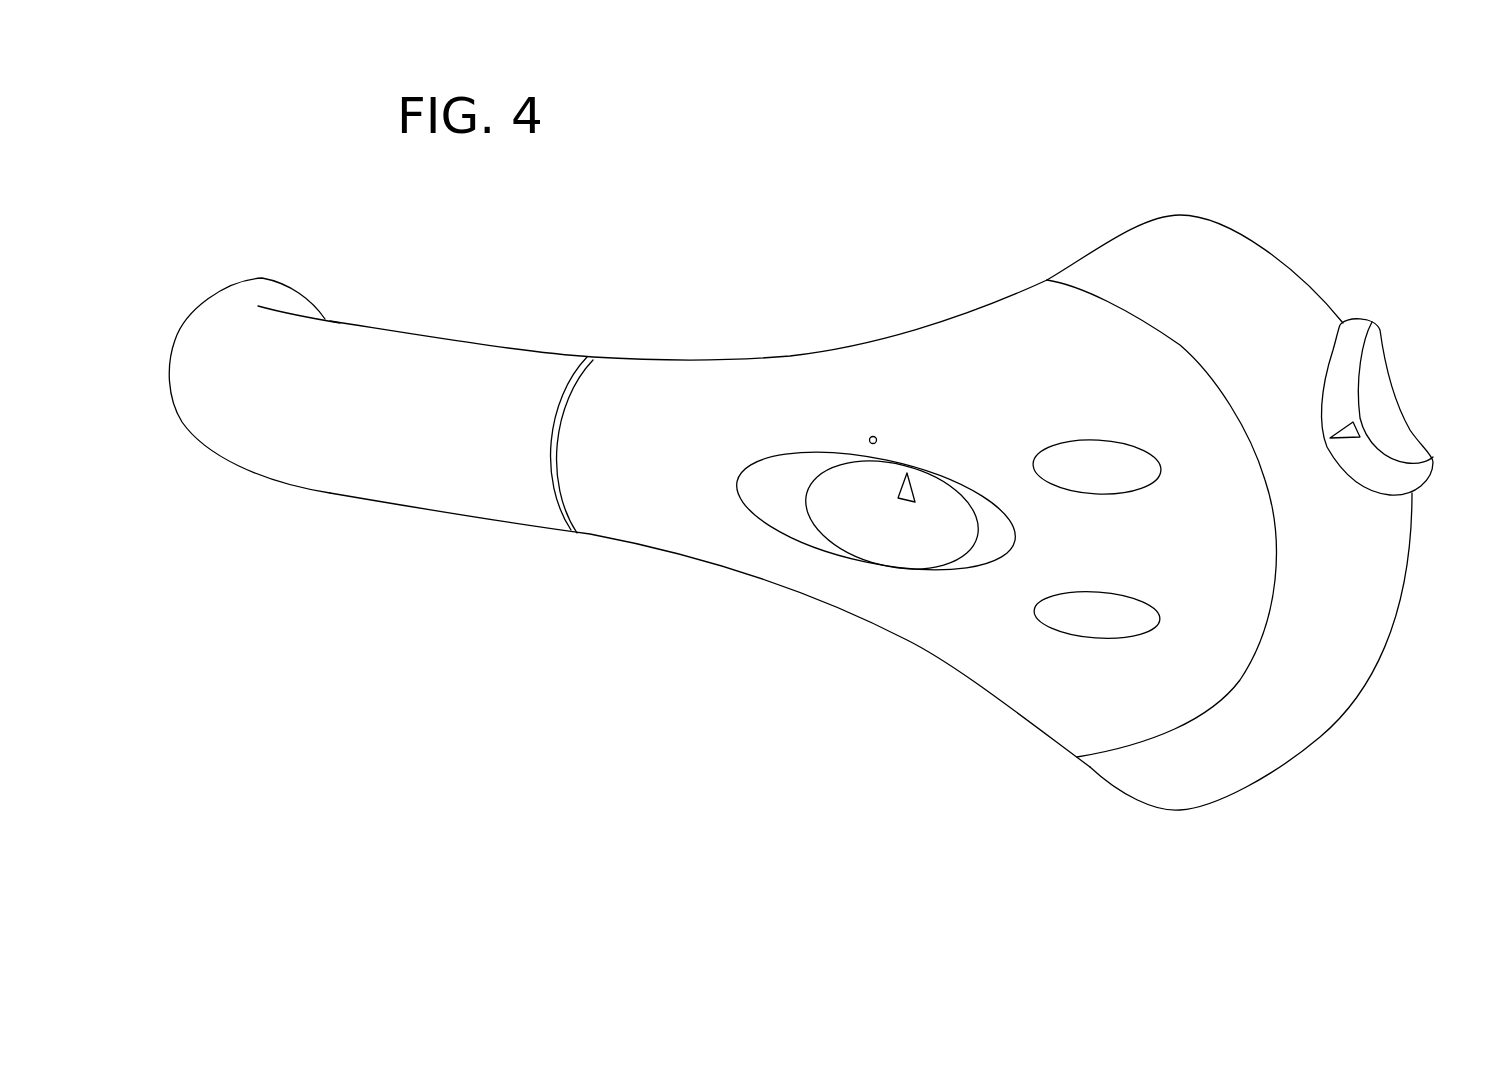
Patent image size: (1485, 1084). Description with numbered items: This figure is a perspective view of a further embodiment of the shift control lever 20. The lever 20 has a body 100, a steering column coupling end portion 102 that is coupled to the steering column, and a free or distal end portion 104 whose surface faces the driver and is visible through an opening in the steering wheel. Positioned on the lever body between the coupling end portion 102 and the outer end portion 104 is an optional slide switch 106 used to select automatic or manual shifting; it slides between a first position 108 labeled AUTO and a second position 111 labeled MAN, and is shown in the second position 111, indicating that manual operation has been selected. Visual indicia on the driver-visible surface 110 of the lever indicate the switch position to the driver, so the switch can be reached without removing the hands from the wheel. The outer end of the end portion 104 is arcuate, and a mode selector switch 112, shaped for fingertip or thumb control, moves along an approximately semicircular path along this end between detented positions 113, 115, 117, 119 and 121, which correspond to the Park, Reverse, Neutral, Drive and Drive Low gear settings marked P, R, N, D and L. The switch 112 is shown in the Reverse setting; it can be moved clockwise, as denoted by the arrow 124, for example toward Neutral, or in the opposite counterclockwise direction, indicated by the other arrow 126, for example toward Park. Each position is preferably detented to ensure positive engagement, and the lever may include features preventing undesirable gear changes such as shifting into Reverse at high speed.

The shift control lever 20 is at (1272, 203).
The body 100 is at (640, 360).
The steering column coupling end portion 102 is at (247, 280).
The distal end portion 104 is at (1363, 690).
The slide switch 106 is at (873, 532).
The first position 108 is at (838, 425).
The surface of the lever body 110 is at (995, 695).
The second position 111 is at (895, 432).
The mode selector switch 112 is at (1402, 443).
The mode select position 113 is at (1187, 755).
The mode select position 115 is at (1265, 667).
The mode select position 117 is at (1292, 560).
The mode select position 119 is at (1273, 442).
The mode select position 121 is at (1213, 333).
The arrow 124 is at (1104, 858).
The pull shift-up direction arrow 126 is at (1084, 187).